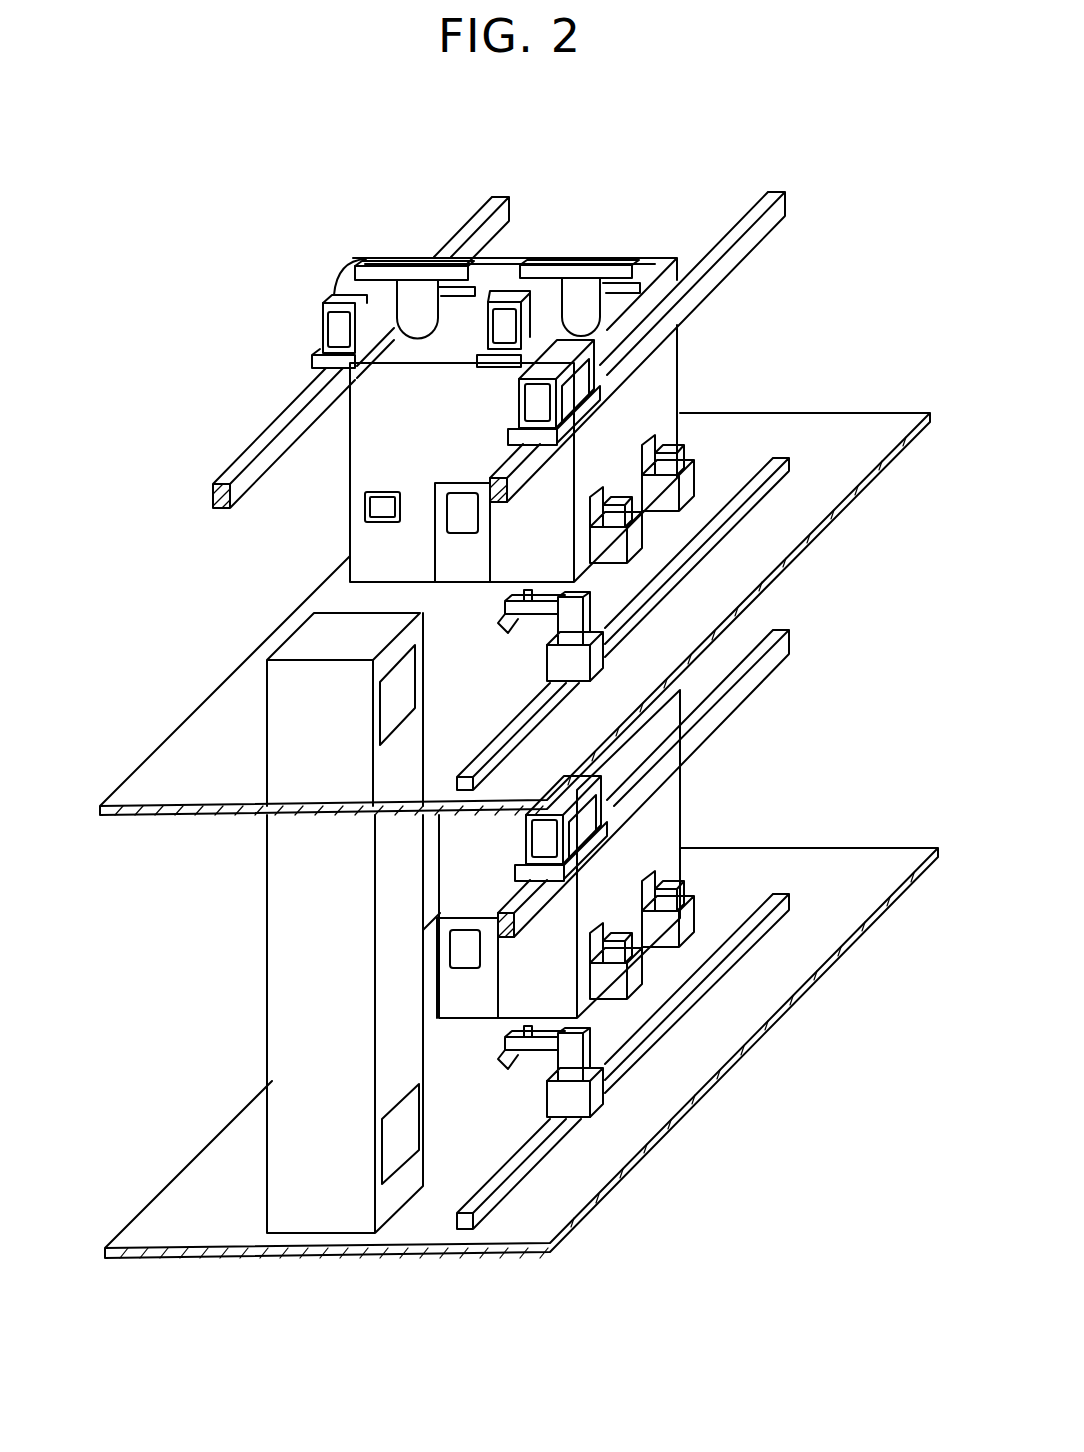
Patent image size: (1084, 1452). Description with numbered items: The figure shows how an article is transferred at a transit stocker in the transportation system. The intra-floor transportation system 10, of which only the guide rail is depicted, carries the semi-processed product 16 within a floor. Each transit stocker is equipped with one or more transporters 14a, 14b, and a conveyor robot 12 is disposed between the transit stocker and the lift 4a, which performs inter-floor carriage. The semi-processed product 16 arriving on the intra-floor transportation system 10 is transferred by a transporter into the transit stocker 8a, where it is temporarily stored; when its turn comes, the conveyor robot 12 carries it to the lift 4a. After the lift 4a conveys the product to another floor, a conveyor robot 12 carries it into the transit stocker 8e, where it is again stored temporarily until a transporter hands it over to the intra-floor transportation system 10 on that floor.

The lift 4a is at (310, 975).
The transit stocker 8a is at (665, 836).
The transit stocker 8e is at (660, 383).
The intra-floor transportation system 10 is at (490, 196).
The conveyor robot 12 is at (597, 662).
The transporter 14a is at (580, 298).
The transporter 14b is at (417, 299).
The semi-processed product 16 is at (336, 330).